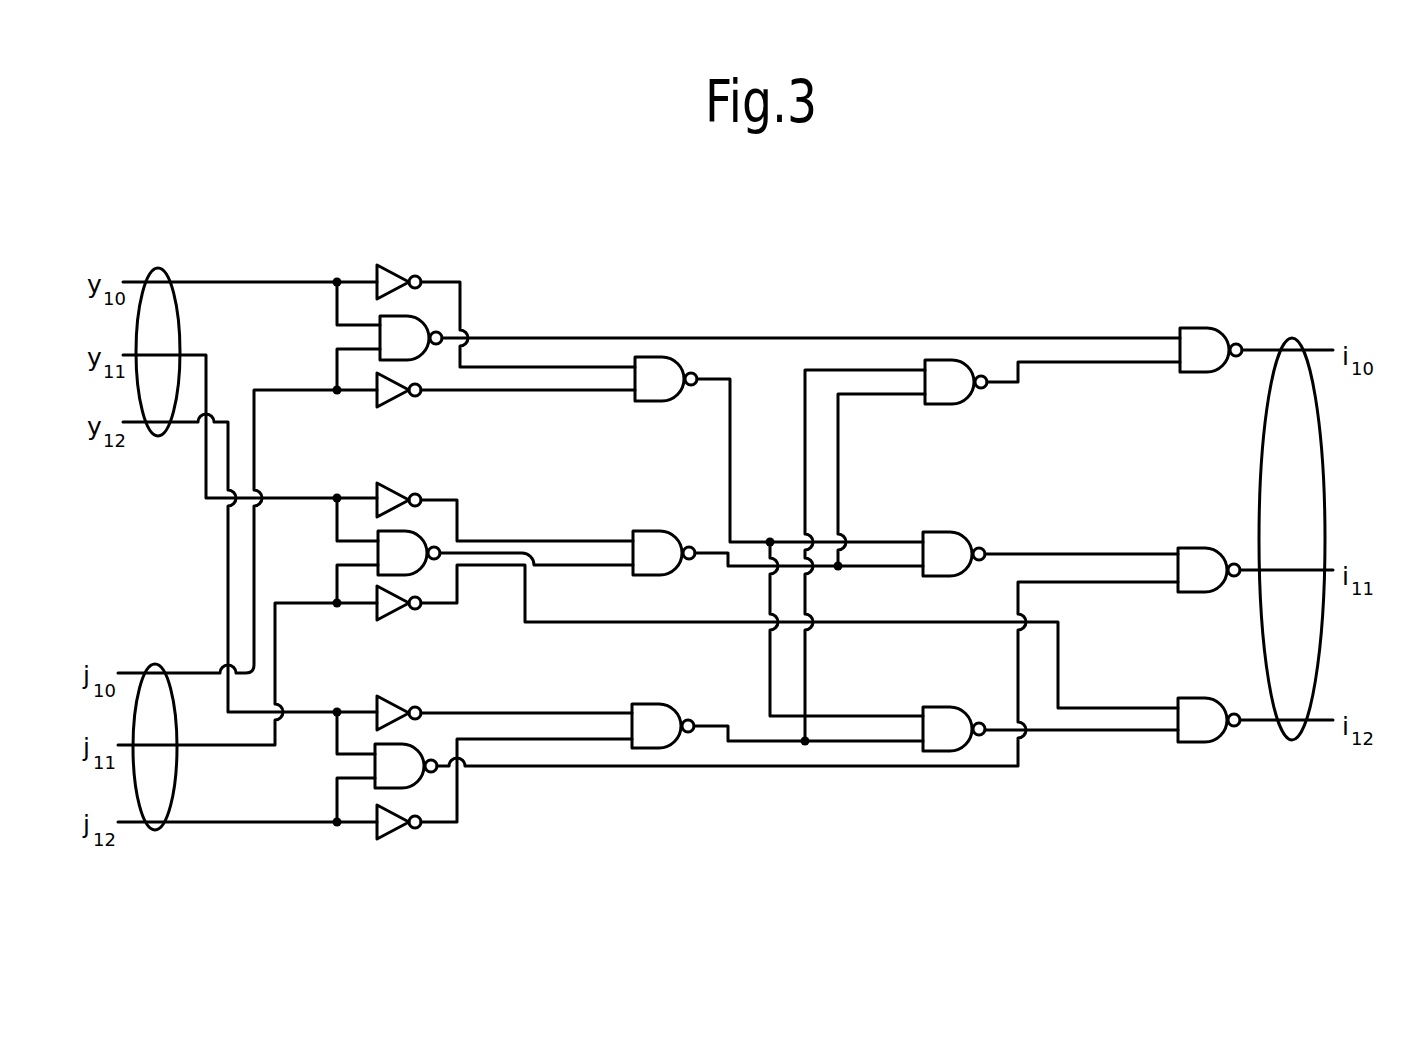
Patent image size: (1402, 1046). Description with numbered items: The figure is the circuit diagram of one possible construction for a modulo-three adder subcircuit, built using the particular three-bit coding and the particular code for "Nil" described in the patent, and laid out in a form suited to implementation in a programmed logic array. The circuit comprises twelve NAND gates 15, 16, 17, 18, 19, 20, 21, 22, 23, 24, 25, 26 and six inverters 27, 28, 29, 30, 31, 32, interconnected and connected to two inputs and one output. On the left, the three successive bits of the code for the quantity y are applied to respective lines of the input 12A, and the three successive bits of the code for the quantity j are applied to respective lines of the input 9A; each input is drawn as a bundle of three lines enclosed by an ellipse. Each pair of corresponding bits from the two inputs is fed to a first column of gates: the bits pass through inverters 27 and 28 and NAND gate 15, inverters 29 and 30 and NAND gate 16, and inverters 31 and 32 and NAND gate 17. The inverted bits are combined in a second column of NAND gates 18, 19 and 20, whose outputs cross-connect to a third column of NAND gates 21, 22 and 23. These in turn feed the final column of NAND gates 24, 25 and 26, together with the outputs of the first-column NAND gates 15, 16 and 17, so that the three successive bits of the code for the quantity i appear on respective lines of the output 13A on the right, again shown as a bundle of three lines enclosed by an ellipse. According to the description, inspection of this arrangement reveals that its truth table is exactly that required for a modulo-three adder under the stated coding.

The input 9A is at (155, 665).
The input 12A is at (160, 268).
The output 13A is at (1294, 338).
The NAND gate 15 is at (383, 339).
The NAND gate 16 is at (381, 554).
The NAND gate 17 is at (378, 767).
The NAND gate 18 is at (668, 398).
The NAND gate 19 is at (668, 565).
The NAND gate 20 is at (669, 712).
The NAND gate 21 is at (945, 405).
The NAND gate 22 is at (946, 533).
The NAND gate 23 is at (946, 708).
The NAND gate 24 is at (1205, 329).
The NAND gate 25 is at (1200, 549).
The NAND gate 26 is at (1200, 699).
The inverter 27 is at (398, 268).
The inverter 28 is at (395, 402).
The inverter 29 is at (395, 485).
The inverter 30 is at (395, 618).
The inverter 31 is at (396, 698).
The inverter 32 is at (396, 837).